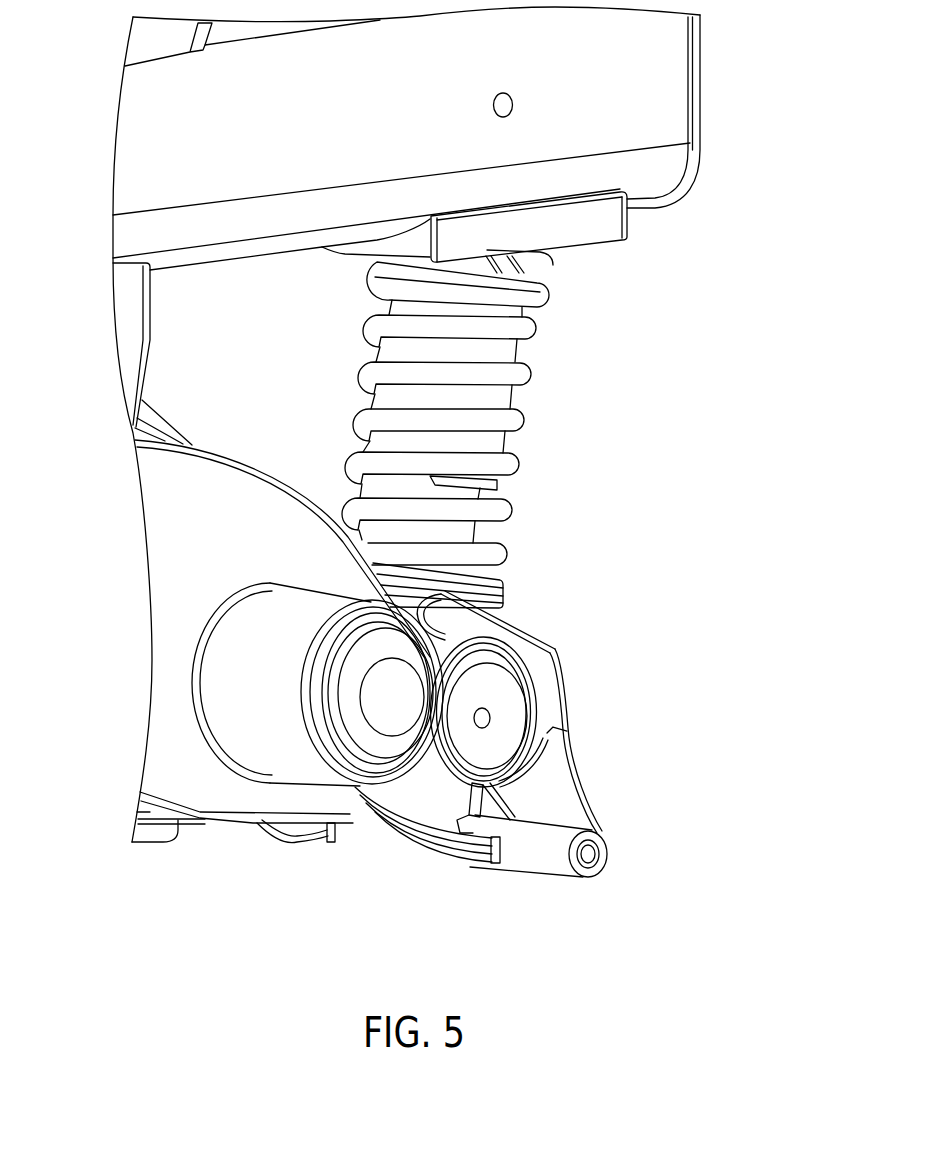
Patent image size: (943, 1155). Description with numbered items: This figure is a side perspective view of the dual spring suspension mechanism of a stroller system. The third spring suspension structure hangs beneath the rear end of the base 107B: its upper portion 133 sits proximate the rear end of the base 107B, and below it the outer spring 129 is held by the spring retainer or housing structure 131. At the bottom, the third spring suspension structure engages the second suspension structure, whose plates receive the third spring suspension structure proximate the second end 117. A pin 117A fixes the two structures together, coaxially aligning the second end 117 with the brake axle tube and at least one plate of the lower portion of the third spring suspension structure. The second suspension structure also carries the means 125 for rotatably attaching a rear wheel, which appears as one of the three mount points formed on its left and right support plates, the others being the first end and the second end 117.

The base 107B is at (647, 103).
The upper portion 133 is at (582, 223).
The spring retainer or housing structure 131 is at (505, 355).
The outer spring 129 is at (518, 425).
The means for rotatably attaching a rear wheel 125 is at (395, 707).
The second end 117 is at (442, 803).
The pin 117A is at (490, 718).